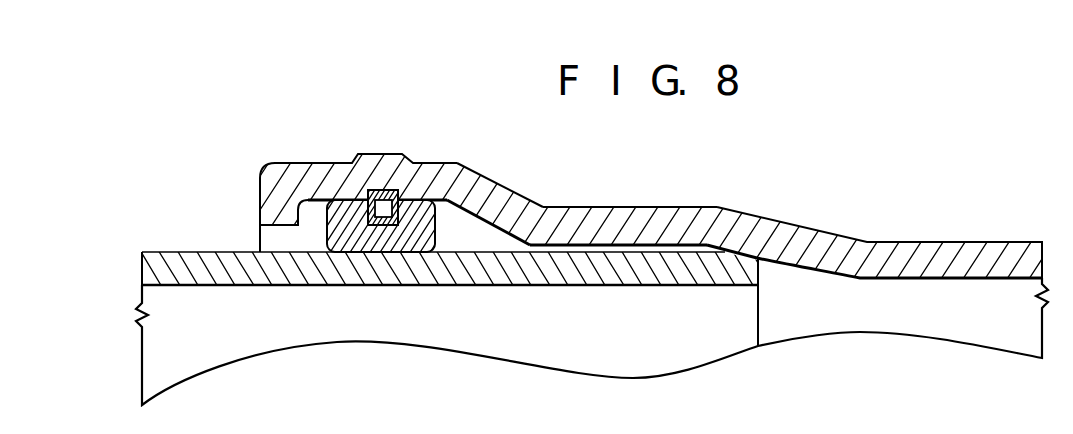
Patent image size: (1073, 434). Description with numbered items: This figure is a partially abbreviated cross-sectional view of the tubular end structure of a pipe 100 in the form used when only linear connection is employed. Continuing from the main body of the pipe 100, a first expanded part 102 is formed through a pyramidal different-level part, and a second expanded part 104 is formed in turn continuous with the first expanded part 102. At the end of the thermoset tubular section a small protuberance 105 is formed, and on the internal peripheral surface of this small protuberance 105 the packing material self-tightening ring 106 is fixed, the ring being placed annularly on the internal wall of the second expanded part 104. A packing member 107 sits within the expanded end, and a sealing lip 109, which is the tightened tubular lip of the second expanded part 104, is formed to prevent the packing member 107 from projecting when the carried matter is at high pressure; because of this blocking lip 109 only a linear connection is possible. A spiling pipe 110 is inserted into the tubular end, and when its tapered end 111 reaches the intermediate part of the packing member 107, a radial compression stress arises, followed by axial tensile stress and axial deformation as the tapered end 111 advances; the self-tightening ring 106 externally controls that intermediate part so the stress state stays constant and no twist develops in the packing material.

The pipe 100 is at (915, 242).
The first expanded part 102 is at (597, 207).
The second expanded part 104 is at (445, 163).
The small protuberance 105 is at (370, 154).
The packing material self-tightening ring 106 is at (398, 190).
The packing member 107 is at (436, 238).
The sealing lip 109 is at (260, 229).
The spiling pipe 110 is at (631, 285).
The tapered end 111 is at (761, 260).